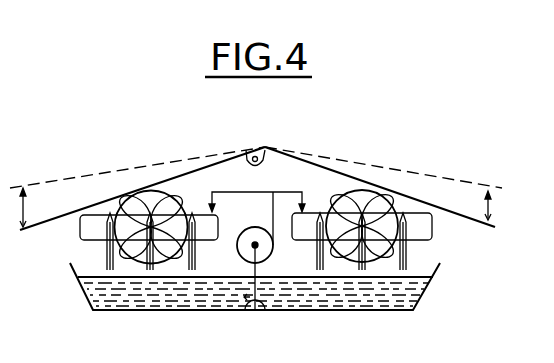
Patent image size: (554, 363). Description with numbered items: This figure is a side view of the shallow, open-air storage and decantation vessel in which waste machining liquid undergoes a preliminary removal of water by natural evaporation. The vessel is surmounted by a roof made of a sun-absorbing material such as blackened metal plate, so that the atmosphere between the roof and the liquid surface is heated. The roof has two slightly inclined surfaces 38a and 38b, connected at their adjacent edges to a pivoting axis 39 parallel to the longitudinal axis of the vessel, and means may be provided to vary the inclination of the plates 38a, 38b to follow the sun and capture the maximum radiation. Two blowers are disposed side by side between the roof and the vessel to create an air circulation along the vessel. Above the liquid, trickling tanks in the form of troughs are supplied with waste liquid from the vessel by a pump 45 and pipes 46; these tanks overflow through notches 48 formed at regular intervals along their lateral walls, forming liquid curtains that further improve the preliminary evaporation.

The roof surface 38a is at (410, 200).
The roof surface 38b is at (110, 198).
The pivoting axis 39 is at (266, 151).
The pump 45 is at (248, 250).
The pipes 46 is at (286, 191).
The notches 48 is at (150, 215).